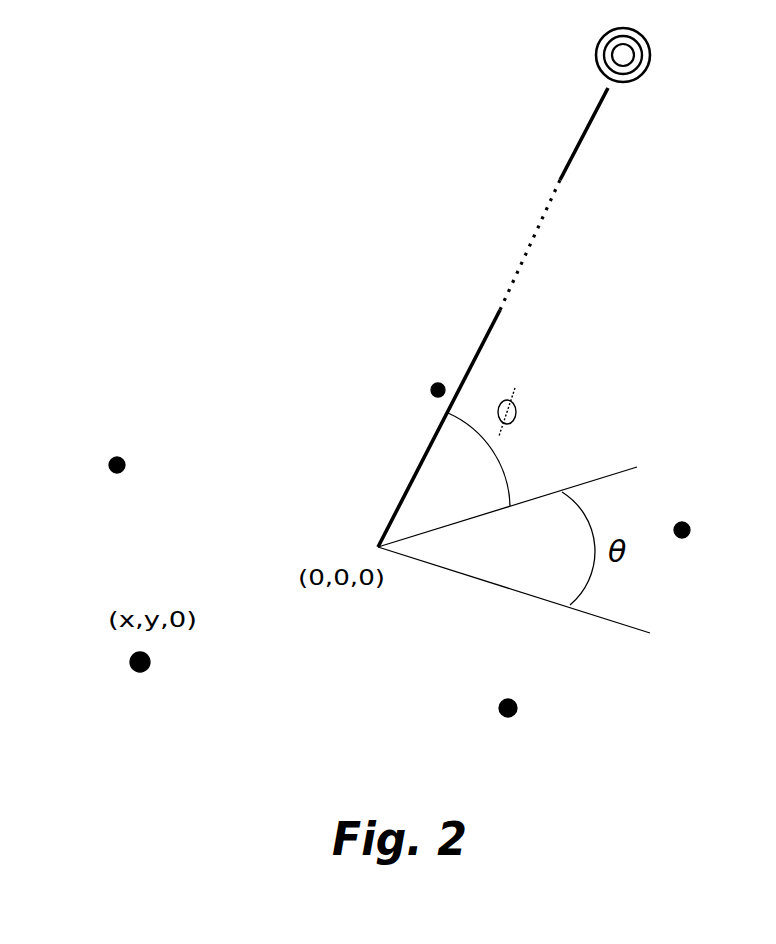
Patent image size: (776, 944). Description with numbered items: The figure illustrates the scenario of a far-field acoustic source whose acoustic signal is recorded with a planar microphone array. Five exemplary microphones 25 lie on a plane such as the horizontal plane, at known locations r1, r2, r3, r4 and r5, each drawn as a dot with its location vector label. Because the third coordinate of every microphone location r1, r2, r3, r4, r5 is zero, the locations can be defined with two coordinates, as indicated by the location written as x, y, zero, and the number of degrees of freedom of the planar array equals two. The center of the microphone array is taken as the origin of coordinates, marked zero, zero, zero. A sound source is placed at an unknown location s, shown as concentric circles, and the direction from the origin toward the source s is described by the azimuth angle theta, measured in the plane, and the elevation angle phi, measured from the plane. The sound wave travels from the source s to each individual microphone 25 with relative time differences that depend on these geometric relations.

The microphone 25 is at (396, 527).
The sound source location s is at (515, 287).
The microphone location r1 is at (518, 672).
The microphone location r2 is at (706, 548).
The microphone location r3 is at (446, 356).
The microphone location r4 is at (125, 430).
The microphone location r5 is at (167, 678).